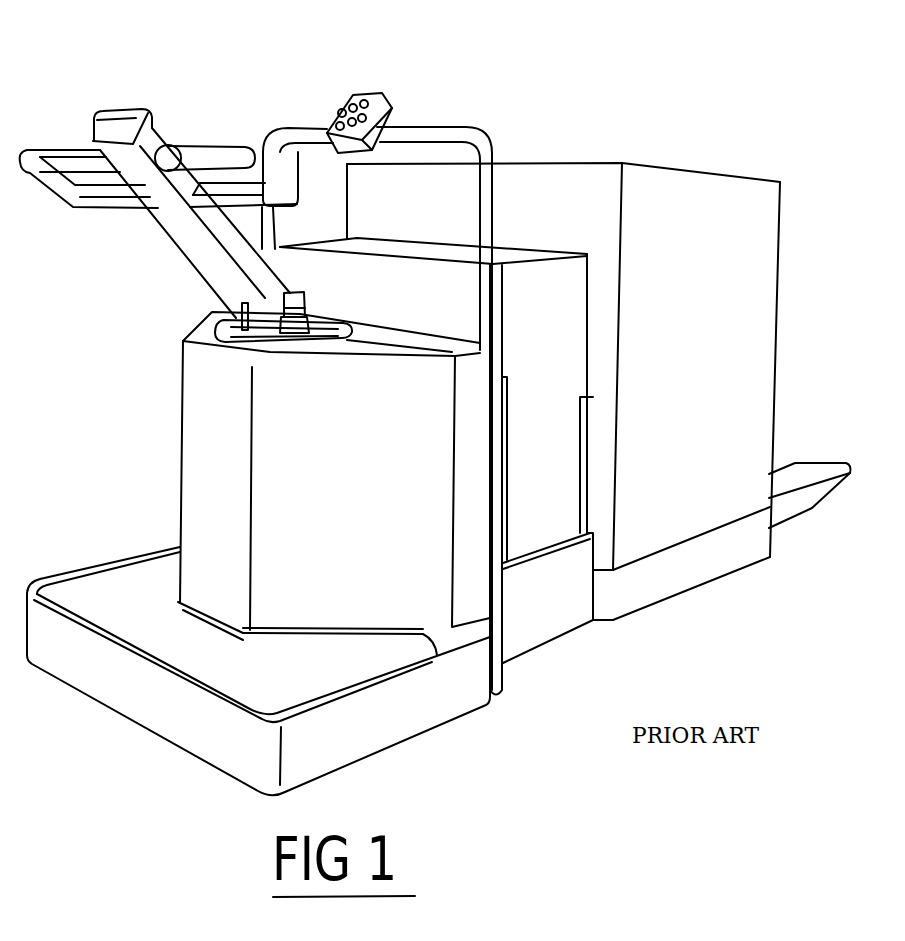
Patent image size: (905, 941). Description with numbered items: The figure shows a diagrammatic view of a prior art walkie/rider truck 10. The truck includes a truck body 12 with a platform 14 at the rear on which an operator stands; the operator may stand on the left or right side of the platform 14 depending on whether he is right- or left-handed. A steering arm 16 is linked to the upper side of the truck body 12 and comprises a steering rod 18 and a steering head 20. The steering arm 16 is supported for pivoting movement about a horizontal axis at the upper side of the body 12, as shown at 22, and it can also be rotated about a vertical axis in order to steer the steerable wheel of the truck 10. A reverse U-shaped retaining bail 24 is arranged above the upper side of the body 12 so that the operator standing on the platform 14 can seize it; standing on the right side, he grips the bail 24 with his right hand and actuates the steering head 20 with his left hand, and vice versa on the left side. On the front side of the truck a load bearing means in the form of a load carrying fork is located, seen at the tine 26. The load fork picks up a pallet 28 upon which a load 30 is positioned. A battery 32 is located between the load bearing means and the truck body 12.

The walkie/rider truck 10 is at (571, 104).
The truck body 12 is at (178, 407).
The platform 14 is at (367, 655).
The steering arm 16 is at (176, 130).
The steering rod 18 is at (182, 239).
The steering head 20 is at (228, 143).
The pivot about a horizontal axis 22 is at (228, 305).
The retaining bail 24 is at (437, 125).
The tine 26 is at (804, 465).
The pallet 28 is at (728, 553).
The load 30 is at (740, 344).
The battery 32 is at (575, 394).